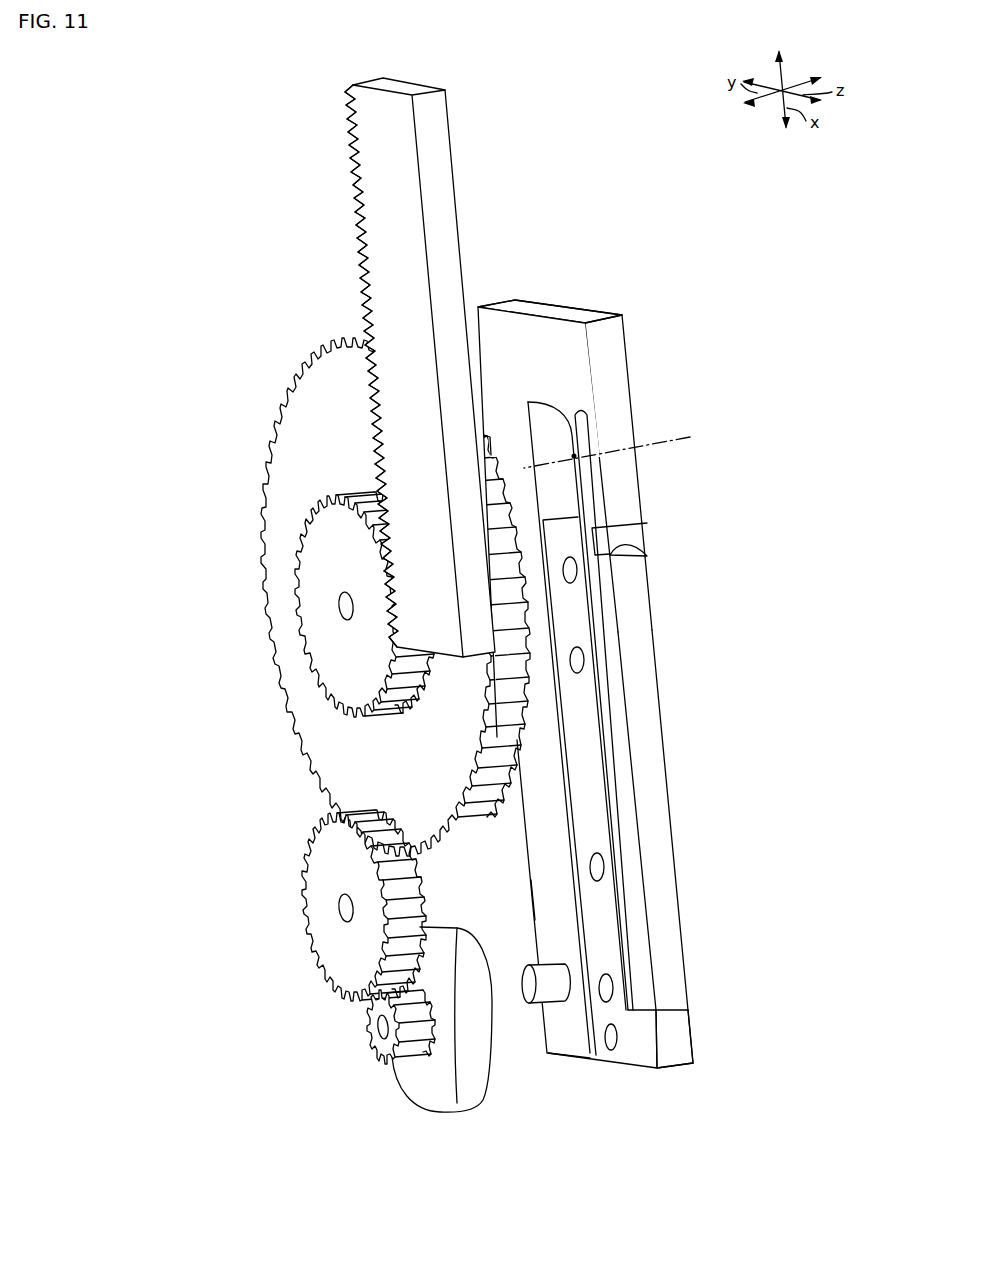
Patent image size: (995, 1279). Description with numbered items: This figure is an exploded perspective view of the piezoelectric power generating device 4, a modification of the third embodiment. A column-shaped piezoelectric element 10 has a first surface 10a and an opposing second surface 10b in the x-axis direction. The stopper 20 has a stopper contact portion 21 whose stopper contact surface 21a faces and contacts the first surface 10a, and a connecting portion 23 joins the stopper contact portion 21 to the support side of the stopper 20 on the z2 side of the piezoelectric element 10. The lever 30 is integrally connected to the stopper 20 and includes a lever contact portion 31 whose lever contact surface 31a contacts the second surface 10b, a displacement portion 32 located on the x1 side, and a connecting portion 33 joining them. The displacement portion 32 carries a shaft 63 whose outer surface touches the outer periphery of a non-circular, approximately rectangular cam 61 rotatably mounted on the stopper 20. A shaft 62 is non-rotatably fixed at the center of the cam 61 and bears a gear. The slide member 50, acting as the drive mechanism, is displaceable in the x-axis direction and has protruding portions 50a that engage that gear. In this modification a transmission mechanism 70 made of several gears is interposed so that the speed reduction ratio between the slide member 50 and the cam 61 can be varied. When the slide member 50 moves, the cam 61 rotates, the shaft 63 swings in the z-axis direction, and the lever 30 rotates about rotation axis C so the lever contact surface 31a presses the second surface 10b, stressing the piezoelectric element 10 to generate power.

The piezoelectric power generating device 4 is at (568, 129).
The piezoelectric element 10 is at (684, 857).
The first surface 10a is at (683, 1067).
The second surface 10b is at (633, 552).
The stopper 20 is at (616, 794).
The stopper contact portion 21 is at (700, 1032).
The stopper contact surface 21a is at (688, 1005).
The connecting portion 23 is at (607, 755).
The lever 30 is at (522, 875).
The lever contact portion 31 is at (640, 491).
The lever contact surface 31a is at (640, 560).
The displacement portion 32 is at (570, 1060).
The connecting portion 33 is at (530, 897).
The slide member 50 is at (402, 367).
The protruding portions 50a is at (350, 243).
The cam 61 is at (463, 1108).
The shaft 62 is at (410, 1065).
The shaft 63 is at (547, 1000).
The transmission mechanism 70 is at (254, 580).
The rotation axis C is at (668, 437).